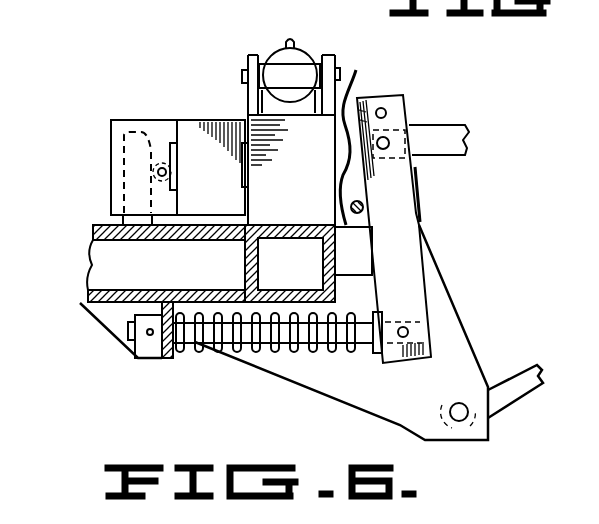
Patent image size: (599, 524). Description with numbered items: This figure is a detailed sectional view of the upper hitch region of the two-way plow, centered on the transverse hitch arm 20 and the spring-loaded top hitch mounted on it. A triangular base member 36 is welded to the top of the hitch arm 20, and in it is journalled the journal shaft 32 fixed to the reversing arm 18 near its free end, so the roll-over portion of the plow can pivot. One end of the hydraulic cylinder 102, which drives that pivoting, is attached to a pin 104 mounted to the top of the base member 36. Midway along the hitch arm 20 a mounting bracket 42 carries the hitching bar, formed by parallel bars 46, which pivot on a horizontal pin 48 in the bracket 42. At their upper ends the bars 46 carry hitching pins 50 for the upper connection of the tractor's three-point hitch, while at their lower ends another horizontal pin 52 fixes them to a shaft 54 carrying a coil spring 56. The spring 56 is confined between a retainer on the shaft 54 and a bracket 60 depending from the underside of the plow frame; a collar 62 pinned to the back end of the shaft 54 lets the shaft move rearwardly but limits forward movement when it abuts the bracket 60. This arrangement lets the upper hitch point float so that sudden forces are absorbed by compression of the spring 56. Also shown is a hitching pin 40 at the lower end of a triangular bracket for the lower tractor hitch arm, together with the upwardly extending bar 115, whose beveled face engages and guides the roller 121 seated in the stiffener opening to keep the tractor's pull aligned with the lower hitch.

The reversing arm 18 is at (212, 120).
The hitch arm 20 is at (330, 264).
The journal shaft 32 is at (243, 166).
The base member 36 is at (300, 178).
The hitching pin 40 is at (459, 424).
The mounting bracket 42 is at (341, 122).
The bar 46 is at (408, 266).
The horizontal pin 48 is at (350, 207).
The hitching pin 50 is at (388, 141).
The horizontal pin 52 is at (408, 331).
The shaft 54 is at (378, 353).
The coil spring 56 is at (287, 358).
The bracket 60 is at (166, 358).
The collar 62 is at (146, 338).
The hydraulic cylinder 102 is at (297, 50).
The pin 104 is at (243, 72).
The bar 115 is at (140, 120).
The roller 121 is at (181, 178).